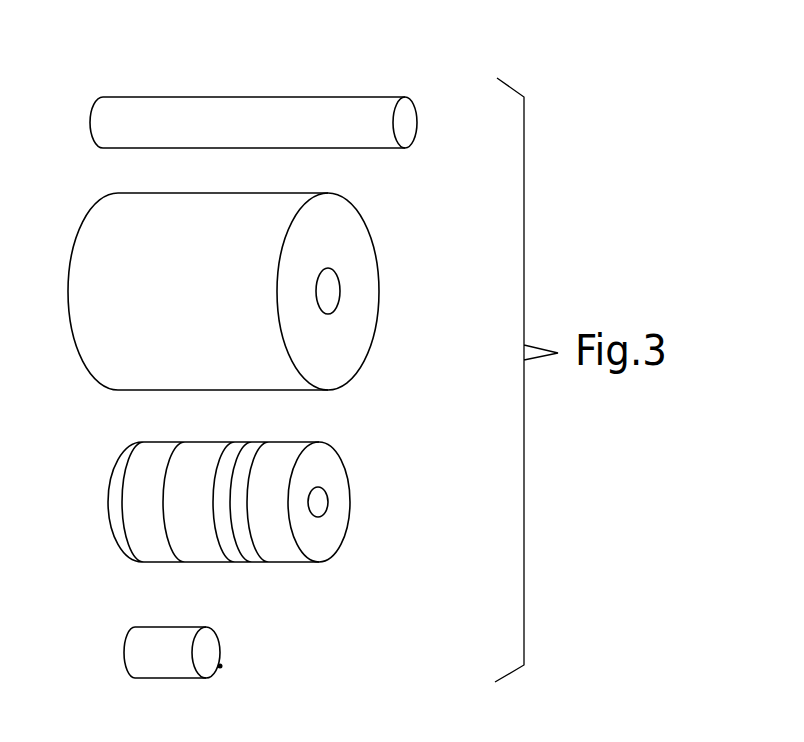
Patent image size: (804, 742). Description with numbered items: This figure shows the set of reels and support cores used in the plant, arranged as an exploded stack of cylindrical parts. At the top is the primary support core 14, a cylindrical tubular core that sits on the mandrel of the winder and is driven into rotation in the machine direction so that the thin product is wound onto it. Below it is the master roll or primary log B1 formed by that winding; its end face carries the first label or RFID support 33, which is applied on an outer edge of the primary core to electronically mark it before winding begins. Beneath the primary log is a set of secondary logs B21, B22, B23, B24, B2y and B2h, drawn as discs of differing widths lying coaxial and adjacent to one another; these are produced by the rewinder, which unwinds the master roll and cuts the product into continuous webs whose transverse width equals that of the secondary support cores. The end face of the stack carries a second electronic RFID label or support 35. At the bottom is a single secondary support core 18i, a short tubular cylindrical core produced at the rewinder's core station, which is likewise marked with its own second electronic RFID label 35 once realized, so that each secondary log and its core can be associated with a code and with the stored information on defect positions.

The primary support core 14 is at (127, 105).
The primary log B1 is at (372, 226).
The first RFID support 33 is at (339, 291).
The secondary log B2y is at (120, 510).
The secondary log B21 is at (171, 450).
The secondary log B22 is at (202, 450).
The secondary log B2h is at (242, 553).
The secondary log B23 is at (253, 450).
The secondary log B24 is at (291, 553).
The second electronic RFID label 35 is at (328, 502).
The secondary support core 18i is at (203, 647).